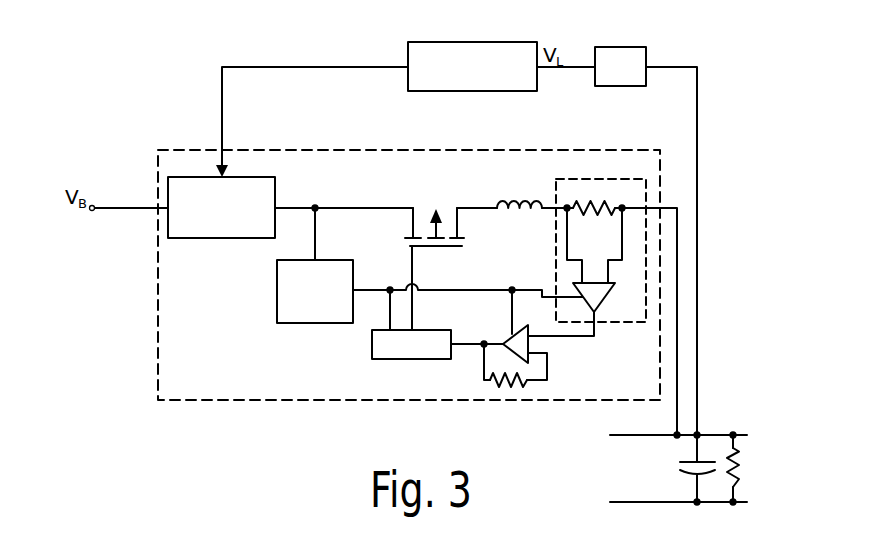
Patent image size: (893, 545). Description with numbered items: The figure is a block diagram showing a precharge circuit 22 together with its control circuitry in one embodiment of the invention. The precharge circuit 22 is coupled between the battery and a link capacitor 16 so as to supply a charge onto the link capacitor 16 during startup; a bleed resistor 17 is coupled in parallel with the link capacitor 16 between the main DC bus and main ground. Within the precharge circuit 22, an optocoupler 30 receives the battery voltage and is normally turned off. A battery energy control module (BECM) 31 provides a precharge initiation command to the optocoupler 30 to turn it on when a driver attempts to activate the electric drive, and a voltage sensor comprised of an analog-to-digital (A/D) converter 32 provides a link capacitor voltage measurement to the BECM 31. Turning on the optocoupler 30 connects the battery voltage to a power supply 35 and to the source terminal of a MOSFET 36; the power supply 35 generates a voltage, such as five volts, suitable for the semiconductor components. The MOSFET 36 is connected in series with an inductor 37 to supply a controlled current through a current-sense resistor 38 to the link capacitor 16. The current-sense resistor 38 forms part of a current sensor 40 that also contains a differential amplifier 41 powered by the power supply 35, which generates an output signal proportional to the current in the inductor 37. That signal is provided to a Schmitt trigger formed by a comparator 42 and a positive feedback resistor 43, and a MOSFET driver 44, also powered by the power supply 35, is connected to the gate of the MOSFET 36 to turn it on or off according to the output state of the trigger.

The link capacitor 16 is at (688, 462).
The bleed resistor 17 is at (740, 468).
The precharge circuit 22 is at (220, 404).
The optocoupler 30 is at (208, 240).
The battery energy control module (BECM) 31 is at (408, 78).
The analog-to-digital (A/D) converter 32 is at (634, 47).
The power supply 35 is at (312, 325).
The MOSFET 36 is at (414, 207).
The inductor 37 is at (514, 194).
The current-sense resistor 38 is at (592, 204).
The current sensor 40 is at (638, 178).
The differential amplifier 41 is at (592, 282).
The comparator 42 is at (505, 331).
The positive feedback resistor 43 is at (505, 390).
The MOSFET driver 44 is at (411, 359).